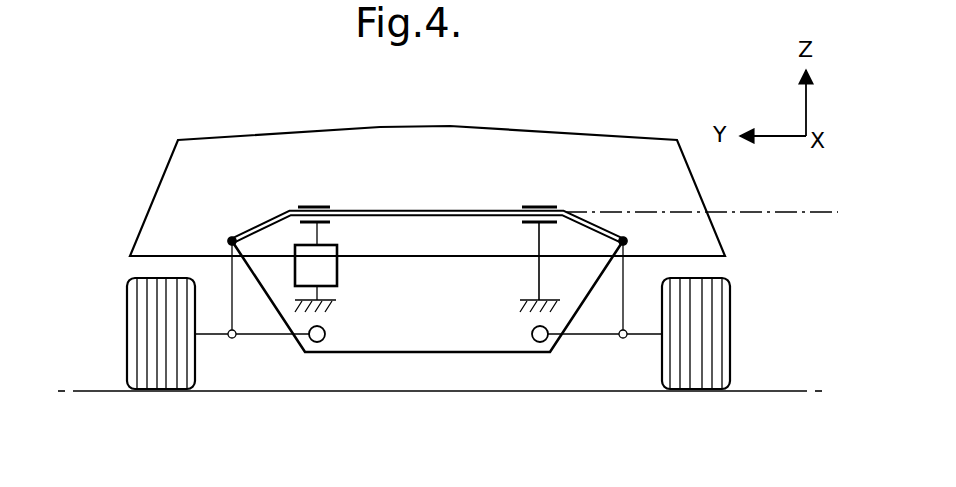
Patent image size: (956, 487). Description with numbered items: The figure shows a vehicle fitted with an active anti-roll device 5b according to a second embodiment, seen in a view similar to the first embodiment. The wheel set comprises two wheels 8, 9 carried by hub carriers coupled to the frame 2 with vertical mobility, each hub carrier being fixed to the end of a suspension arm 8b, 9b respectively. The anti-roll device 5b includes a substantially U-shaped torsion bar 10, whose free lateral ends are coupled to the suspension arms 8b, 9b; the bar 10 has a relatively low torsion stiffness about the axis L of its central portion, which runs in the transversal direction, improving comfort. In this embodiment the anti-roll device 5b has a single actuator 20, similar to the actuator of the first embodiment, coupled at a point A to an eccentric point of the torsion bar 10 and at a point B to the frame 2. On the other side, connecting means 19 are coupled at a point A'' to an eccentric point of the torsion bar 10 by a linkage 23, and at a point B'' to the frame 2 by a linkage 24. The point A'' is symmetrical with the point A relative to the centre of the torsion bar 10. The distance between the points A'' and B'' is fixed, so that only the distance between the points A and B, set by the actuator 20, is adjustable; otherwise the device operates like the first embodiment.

The frame 2 is at (358, 128).
The anti-roll device 5b is at (408, 186).
The wheel 8 is at (127, 310).
The wheel 9 is at (730, 310).
The suspension arm 8b is at (273, 337).
The suspension arm 9b is at (590, 337).
The torsion bar 10 is at (447, 211).
The connecting means 19 is at (538, 262).
The actuator 20 is at (340, 258).
The linkage 23 is at (540, 207).
The linkage 24 is at (548, 298).
The point A is at (348, 191).
The point A" A'' is at (513, 200).
The point B is at (347, 304).
The point B" B'' is at (486, 305).
The axis L is at (810, 212).